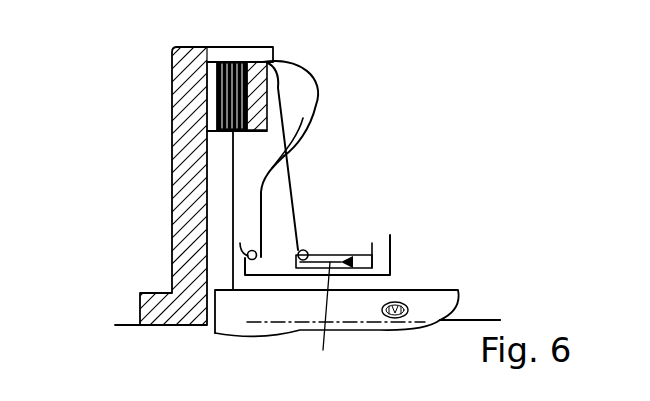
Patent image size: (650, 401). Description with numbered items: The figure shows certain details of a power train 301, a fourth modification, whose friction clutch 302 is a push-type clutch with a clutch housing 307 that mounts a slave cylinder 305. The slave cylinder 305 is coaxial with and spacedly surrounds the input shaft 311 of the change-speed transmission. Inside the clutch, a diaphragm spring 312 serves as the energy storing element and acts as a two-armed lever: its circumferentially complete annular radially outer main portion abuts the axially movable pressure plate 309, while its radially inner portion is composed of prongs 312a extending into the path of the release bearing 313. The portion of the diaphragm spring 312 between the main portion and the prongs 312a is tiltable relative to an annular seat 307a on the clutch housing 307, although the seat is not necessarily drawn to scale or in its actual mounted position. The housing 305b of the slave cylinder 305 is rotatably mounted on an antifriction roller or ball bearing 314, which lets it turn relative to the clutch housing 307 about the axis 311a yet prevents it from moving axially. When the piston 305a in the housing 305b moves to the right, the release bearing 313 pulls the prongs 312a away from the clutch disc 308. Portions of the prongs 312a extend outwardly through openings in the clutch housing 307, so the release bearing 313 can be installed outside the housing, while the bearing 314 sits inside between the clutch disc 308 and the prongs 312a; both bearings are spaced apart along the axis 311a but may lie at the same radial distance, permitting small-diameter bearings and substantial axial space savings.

The power train 301 is at (162, 103).
The friction clutch 302 is at (414, 103).
The slave cylinder 305 is at (349, 241).
The piston 305a is at (327, 321).
The housing of the slave cylinder 305b is at (392, 255).
The clutch housing 307 is at (310, 84).
The annular seat 307a is at (290, 157).
The clutch disc 308 is at (230, 187).
The pressure plate 309 is at (262, 58).
The input shaft 311 is at (357, 313).
The axis 311a is at (483, 320).
The diaphragm spring 312 is at (300, 134).
The prongs 312a is at (262, 212).
The release bearing 313 is at (306, 249).
The antifriction roller bearing 314 is at (248, 258).